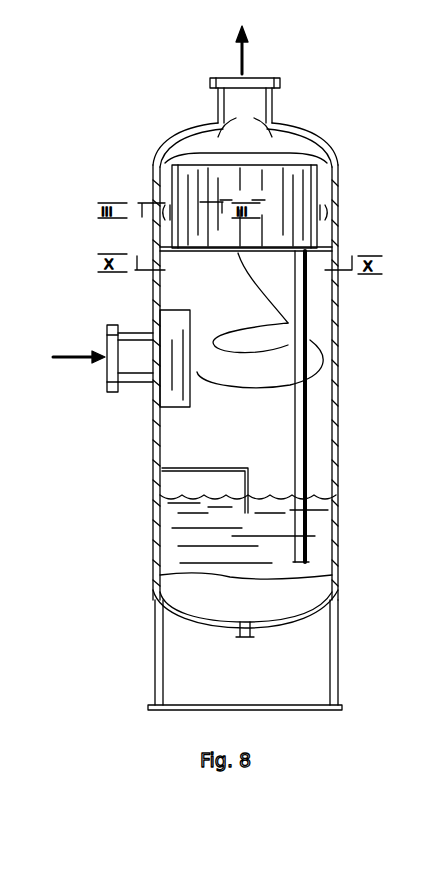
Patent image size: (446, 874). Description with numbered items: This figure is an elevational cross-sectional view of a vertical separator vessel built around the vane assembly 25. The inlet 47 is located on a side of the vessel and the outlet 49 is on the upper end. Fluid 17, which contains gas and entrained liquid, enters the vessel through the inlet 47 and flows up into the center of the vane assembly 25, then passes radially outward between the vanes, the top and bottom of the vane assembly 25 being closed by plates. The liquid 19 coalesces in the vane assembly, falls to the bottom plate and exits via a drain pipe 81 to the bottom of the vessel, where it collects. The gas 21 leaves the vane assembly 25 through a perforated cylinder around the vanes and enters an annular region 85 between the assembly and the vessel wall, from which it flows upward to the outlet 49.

The fluid 17 is at (68, 353).
The liquid 19 is at (178, 535).
The gas 21 is at (236, 50).
The vane assembly 25 is at (310, 190).
The inlet 47 is at (108, 378).
The outlet 49 is at (270, 82).
The drain pipe 81 is at (310, 447).
The annular region 85 is at (328, 236).